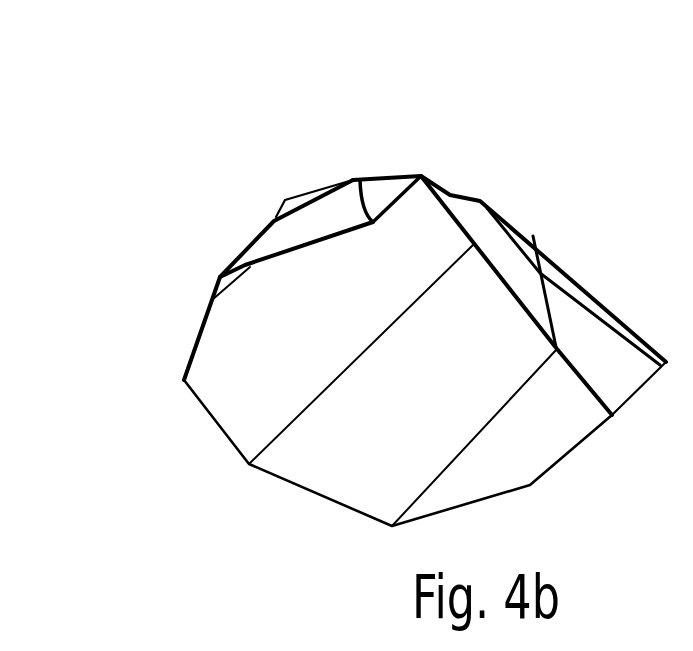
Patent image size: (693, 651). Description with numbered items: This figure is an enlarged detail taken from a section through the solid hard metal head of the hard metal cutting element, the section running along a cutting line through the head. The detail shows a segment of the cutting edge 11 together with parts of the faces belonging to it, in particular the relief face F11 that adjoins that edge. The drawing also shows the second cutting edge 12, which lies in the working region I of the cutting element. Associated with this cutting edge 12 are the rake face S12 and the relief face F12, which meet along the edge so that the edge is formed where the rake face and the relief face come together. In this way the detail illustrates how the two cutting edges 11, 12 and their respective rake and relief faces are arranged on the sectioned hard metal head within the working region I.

The cutting edge 11 is at (423, 173).
The cutting edge 12 is at (285, 200).
The relief face F11 is at (381, 197).
The relief face F12 is at (305, 192).
The rake face S12 is at (545, 105).
The working region I is at (318, 162).